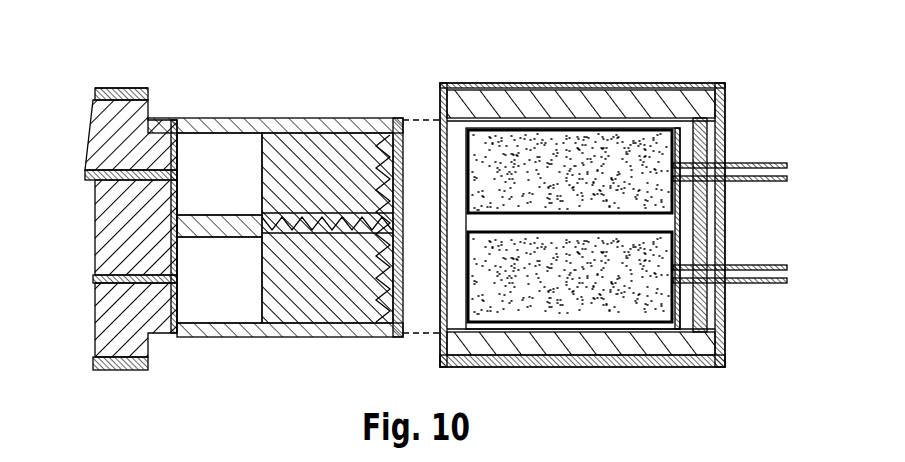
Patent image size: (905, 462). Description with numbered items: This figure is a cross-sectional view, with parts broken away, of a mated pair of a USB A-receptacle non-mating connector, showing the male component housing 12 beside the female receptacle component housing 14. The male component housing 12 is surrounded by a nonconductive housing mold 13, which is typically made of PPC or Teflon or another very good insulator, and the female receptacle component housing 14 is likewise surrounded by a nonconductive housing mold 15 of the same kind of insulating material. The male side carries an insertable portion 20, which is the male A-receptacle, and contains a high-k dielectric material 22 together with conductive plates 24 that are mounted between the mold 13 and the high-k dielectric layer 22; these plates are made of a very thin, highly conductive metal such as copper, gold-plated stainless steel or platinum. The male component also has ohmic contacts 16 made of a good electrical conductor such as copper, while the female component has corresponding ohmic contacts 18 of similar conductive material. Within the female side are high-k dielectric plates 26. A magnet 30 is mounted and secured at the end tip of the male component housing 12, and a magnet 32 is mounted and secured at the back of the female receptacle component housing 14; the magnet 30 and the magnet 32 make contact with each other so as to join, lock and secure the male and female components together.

The male component housing 12 is at (118, 84).
The nonconductive housing mold 13 is at (135, 86).
The female receptacle component housing 14 is at (613, 216).
The nonconductive housing mold 15 is at (583, 88).
The ohmic contacts 16 is at (582, 368).
The ohmic contacts 18 is at (748, 263).
The insertable portion 20 is at (207, 117).
The high-k dielectric material 22 is at (297, 118).
The conductive plates 24 is at (256, 175).
The high-k dielectric plates 26 is at (637, 124).
The magnet 30 is at (398, 117).
The magnet 32 is at (682, 88).